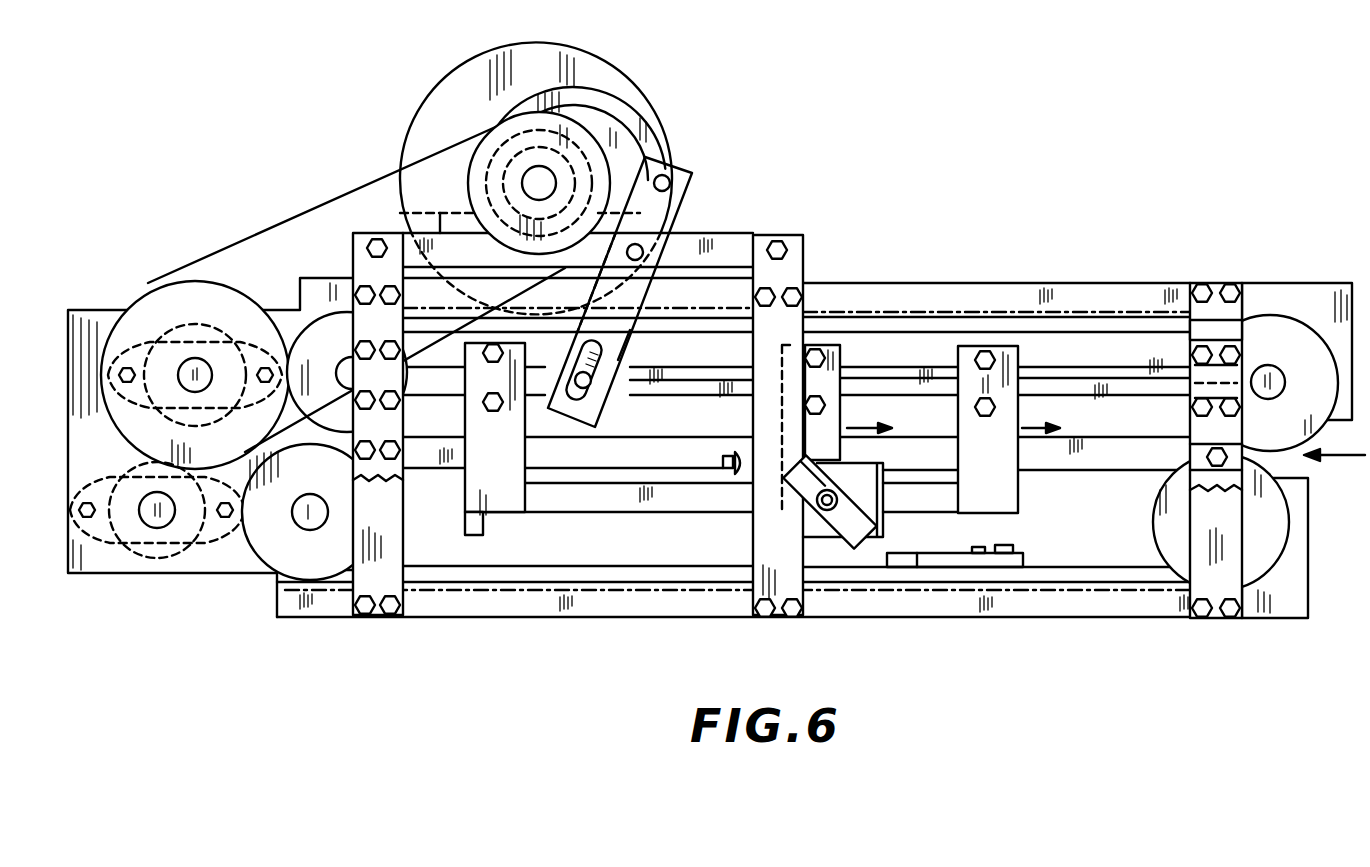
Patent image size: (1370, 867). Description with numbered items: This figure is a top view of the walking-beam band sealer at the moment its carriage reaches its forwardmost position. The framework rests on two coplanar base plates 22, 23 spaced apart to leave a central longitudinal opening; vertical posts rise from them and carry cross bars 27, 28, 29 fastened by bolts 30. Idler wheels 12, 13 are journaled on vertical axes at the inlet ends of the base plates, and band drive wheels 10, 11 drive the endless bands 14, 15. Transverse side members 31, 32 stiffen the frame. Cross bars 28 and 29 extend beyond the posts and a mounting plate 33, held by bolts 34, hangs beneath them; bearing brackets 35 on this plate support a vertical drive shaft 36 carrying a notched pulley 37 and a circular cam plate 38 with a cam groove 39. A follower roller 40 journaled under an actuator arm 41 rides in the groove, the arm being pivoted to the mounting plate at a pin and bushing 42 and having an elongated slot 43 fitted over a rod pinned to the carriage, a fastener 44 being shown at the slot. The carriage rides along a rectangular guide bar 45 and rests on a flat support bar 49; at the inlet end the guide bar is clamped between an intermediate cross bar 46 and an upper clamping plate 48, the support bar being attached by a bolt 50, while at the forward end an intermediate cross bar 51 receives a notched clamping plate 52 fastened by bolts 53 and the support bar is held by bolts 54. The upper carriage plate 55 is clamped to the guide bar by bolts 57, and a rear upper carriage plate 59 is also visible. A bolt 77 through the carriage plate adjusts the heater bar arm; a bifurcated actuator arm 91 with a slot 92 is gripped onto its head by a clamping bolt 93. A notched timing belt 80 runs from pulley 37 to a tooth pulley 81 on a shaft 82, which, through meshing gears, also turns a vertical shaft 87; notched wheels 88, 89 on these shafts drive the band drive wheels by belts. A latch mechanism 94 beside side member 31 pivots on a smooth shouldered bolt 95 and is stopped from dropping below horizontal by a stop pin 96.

The band drive wheel 10 is at (302, 328).
The band drive wheel 11 is at (270, 560).
The idler wheel 12 is at (1292, 384).
The idler wheel 13 is at (1249, 527).
The band 14 is at (922, 312).
The band 15 is at (1078, 592).
The base plate 22 is at (1290, 604).
The base plate 23 is at (1300, 292).
The cross bar 27 is at (1202, 515).
The cross bar 28 is at (765, 547).
The cross bar 29 is at (365, 515).
The bolts 30 is at (365, 613).
The side member 31 is at (552, 566).
The side member 32 is at (912, 333).
The mounting plate 33 is at (738, 252).
The bolts 34 is at (367, 248).
The bearing brackets 35 is at (400, 213).
The drive shaft 36 is at (526, 171).
The notched pulley 37 is at (512, 183).
The circular cam plate 38 is at (440, 85).
The cam groove 39 is at (626, 105).
The follower roller 40 is at (681, 168).
The actuator arm 41 is at (628, 340).
The pin and bushing 42 is at (643, 250).
The elongated slot 43 is at (578, 350).
The adjusting bolt 44 is at (591, 385).
The guide bar 45 is at (705, 396).
The intermediate cross bar 46 is at (1192, 330).
The upper clamping plate 48 is at (1236, 350).
The support bar 49 is at (617, 462).
The bolt 50 is at (1207, 457).
The intermediate cross bar 51 is at (353, 479).
The clamping plate 52 is at (357, 343).
The bolts 53 is at (400, 400).
The bolts 54 is at (400, 452).
The upper carriage plate 55 is at (809, 437).
The bolts 57 is at (826, 403).
The rear upper carriage plate 59 is at (977, 462).
The bolt 77 is at (752, 499).
The notched timing belt 80 is at (357, 190).
The tooth pulley 81 is at (133, 309).
The shaft 82 is at (190, 360).
The vertical shaft 87 is at (155, 527).
The notched wheel 88 is at (178, 540).
The notched wheel 89 is at (225, 348).
The bifurcated actuator arm 91 is at (850, 517).
The slot 92 is at (802, 456).
The clamping bolt 93 is at (818, 460).
The latch mechanism 94 is at (937, 558).
The smooth shouldered bolt 95 is at (1008, 547).
The stop pin 96 is at (980, 547).